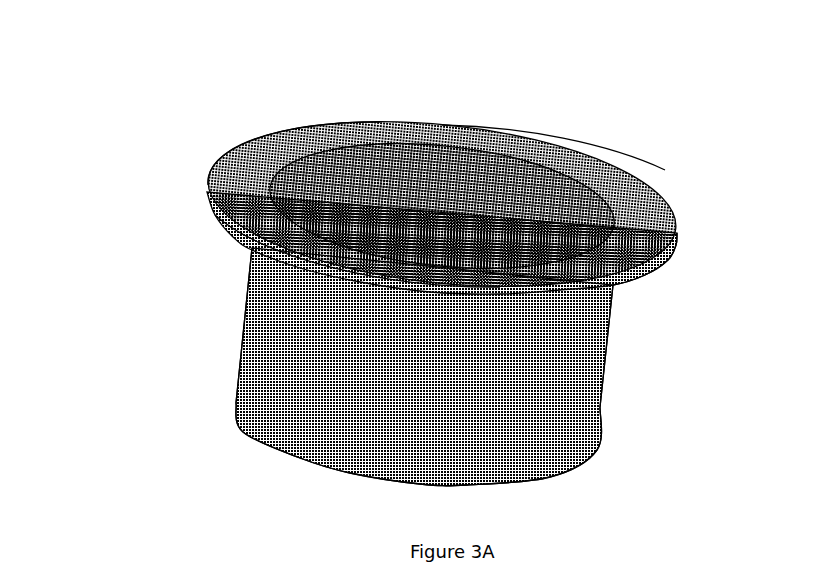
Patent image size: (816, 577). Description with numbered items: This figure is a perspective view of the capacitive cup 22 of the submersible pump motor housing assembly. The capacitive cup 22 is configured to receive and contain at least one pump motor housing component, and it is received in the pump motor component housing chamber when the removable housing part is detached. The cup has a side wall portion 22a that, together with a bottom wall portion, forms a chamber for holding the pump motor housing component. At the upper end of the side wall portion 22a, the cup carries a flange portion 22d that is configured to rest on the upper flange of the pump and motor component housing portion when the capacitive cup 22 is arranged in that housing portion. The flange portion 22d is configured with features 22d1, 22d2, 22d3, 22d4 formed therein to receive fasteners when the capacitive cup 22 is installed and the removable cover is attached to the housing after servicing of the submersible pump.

The capacitive cup 22 is at (120, 130).
The side wall portion 22a is at (297, 343).
The flange portion 22d is at (632, 207).
The fastener receiving feature 22d1 is at (543, 153).
The fastener receiving feature 22d2 is at (258, 148).
The fastener receiving feature 22d3 is at (343, 255).
The fastener receiving feature 22d4 is at (620, 258).